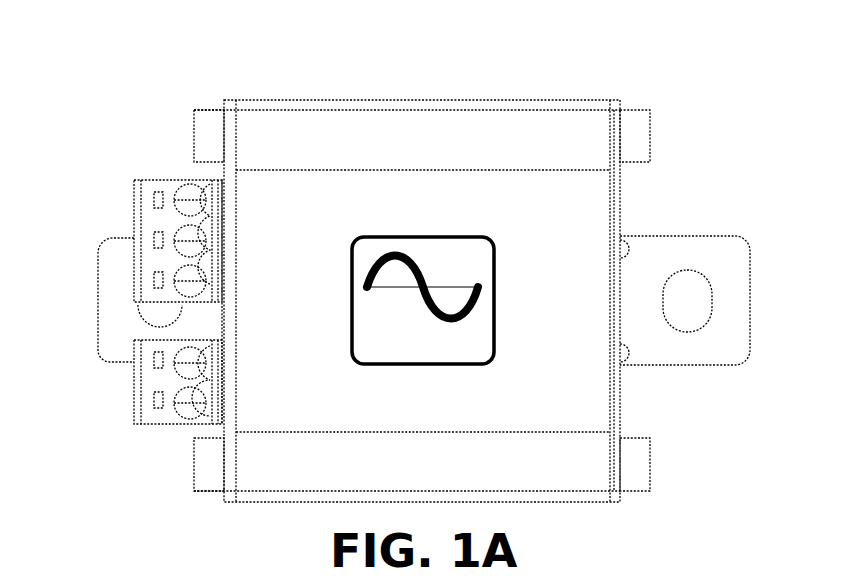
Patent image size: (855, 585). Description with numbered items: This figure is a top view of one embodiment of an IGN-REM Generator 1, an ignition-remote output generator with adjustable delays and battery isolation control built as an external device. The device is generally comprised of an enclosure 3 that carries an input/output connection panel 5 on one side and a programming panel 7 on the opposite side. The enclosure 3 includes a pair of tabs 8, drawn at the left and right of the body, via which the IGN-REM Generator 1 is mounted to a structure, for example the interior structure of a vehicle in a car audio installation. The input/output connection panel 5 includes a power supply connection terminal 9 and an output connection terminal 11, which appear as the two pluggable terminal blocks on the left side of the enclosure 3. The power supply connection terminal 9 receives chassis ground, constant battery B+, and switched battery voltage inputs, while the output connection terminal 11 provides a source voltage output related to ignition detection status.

The IGN-REM Generator 1 is at (272, 78).
The enclosure 3 is at (418, 108).
The input/output connection panel 5 is at (228, 320).
The programming panel 7 is at (622, 208).
The tabs 8 is at (110, 358).
The power supply connection terminal 9 is at (170, 188).
The output connection terminal 11 is at (172, 412).